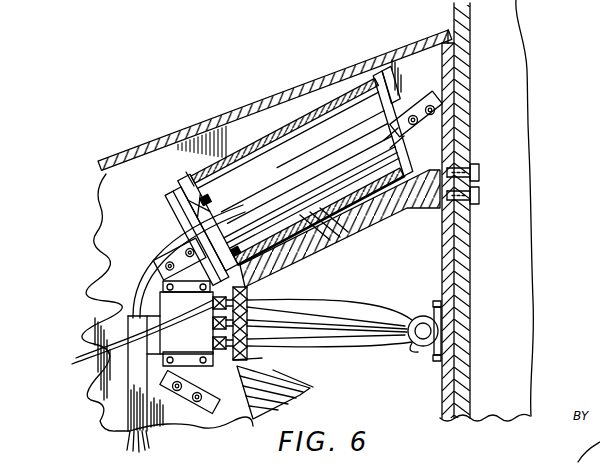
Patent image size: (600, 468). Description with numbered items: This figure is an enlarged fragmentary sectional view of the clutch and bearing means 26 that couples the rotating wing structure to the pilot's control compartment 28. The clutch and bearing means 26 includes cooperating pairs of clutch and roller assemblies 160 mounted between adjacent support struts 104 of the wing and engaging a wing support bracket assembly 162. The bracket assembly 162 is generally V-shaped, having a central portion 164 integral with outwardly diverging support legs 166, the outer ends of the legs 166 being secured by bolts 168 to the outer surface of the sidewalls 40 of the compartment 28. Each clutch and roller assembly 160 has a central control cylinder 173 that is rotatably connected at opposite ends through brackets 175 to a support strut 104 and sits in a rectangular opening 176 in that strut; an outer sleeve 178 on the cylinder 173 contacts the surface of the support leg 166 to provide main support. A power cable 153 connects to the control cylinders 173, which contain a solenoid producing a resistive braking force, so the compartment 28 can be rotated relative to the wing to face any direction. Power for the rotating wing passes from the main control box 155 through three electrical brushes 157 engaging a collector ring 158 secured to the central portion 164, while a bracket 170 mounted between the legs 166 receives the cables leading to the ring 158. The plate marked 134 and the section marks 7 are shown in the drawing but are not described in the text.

The section line 7- 7 is at (210, 295).
The clutch and bearing means 26 is at (300, 153).
The pilot's control compartment 28 is at (504, 116).
The sidewalls 40 is at (460, 43).
The support struts 104 is at (128, 181).
The mounting plate 134 is at (275, 85).
The power cable 153 is at (364, 310).
The main control box 155 is at (168, 297).
The electrical brushes 157 is at (122, 334).
The collector ring 158 is at (272, 305).
The clutch and roller assembly 160 is at (190, 180).
The wing support bracket assembly 162 is at (398, 217).
The central portion 164 is at (263, 354).
The support legs 166 is at (352, 247).
The bolts 168 is at (480, 197).
The bracket 170 is at (452, 333).
The control cylinder 173 is at (343, 127).
The brackets 175 is at (418, 107).
The rectangular opening 176 is at (378, 90).
The outer sleeve 178 is at (323, 111).